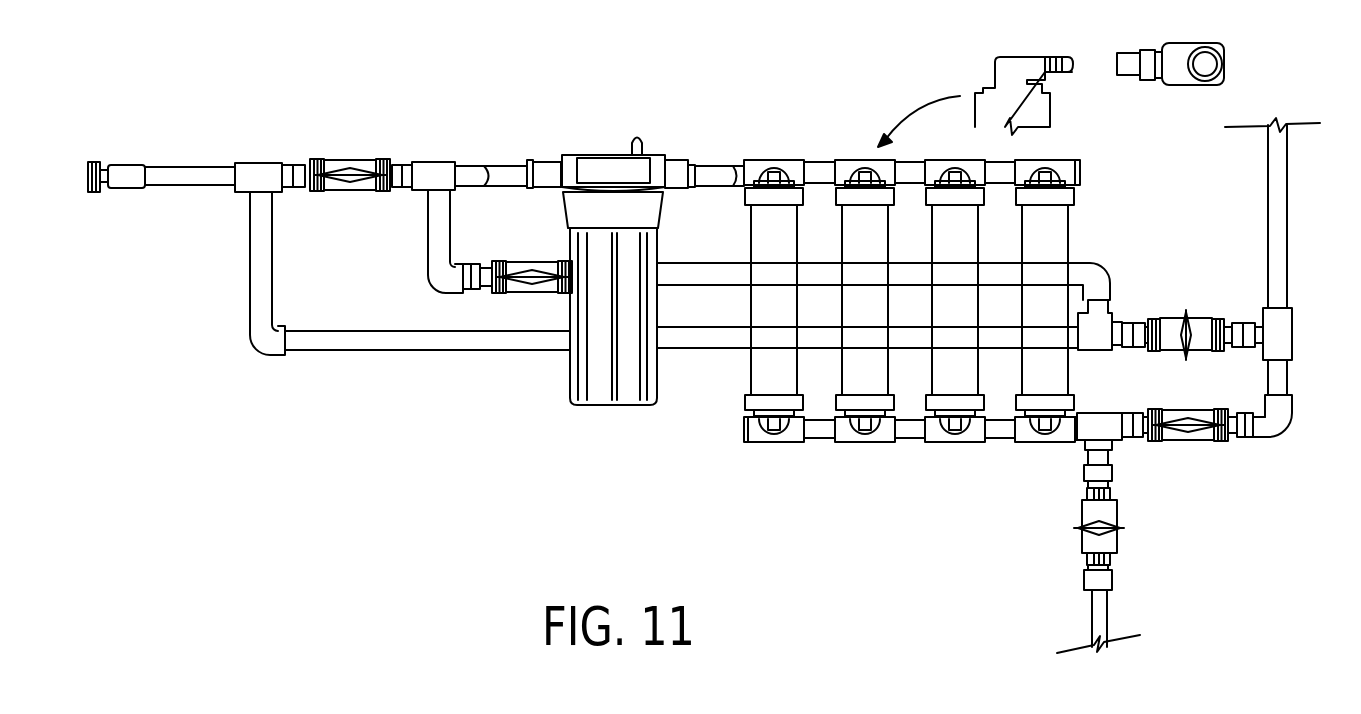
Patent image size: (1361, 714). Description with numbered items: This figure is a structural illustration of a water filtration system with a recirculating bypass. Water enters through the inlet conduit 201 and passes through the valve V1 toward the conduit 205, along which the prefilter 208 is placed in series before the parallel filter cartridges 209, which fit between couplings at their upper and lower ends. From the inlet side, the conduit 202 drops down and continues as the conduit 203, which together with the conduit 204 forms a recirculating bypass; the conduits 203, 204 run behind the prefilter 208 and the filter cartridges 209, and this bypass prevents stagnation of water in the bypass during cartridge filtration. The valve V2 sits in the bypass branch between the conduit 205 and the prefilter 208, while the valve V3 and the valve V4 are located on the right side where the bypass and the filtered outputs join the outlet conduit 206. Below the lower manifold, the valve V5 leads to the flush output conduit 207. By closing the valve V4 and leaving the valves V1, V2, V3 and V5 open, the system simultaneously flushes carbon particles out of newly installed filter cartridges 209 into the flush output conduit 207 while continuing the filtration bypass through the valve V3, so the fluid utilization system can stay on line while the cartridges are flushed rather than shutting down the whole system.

The conduit 201 is at (196, 162).
The conduit 202 is at (286, 273).
The conduit 203 is at (427, 328).
The conduit 204 is at (884, 295).
The conduit 205 is at (476, 161).
The conduit 206 is at (1285, 277).
The flush output conduit 207 is at (1109, 621).
The prefilter 208 is at (601, 416).
The filter cartridges 209 is at (1049, 238).
The valve V1 is at (348, 155).
The valve V2 is at (500, 241).
The valve V3 is at (1187, 319).
The valve V4 is at (1171, 442).
The valve V5 is at (1078, 520).